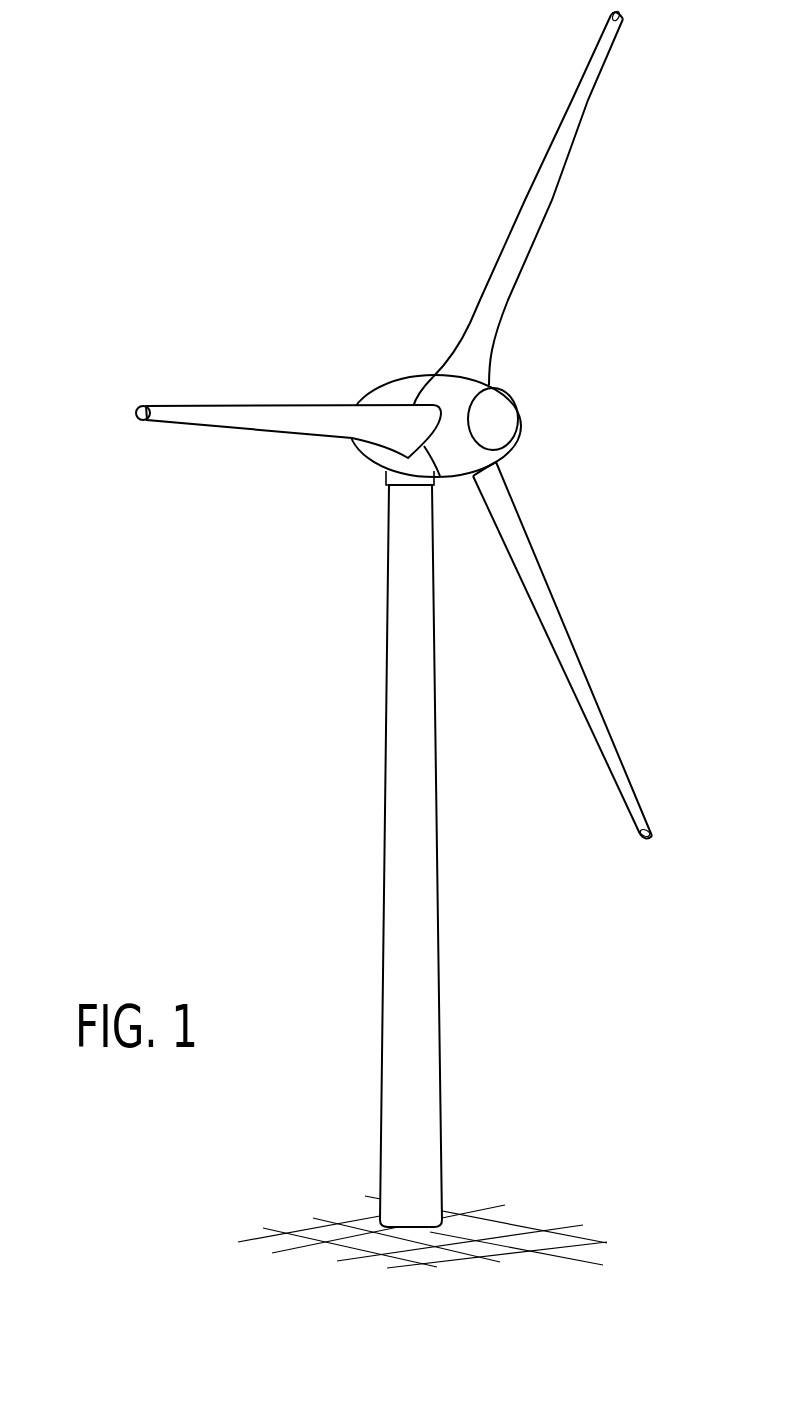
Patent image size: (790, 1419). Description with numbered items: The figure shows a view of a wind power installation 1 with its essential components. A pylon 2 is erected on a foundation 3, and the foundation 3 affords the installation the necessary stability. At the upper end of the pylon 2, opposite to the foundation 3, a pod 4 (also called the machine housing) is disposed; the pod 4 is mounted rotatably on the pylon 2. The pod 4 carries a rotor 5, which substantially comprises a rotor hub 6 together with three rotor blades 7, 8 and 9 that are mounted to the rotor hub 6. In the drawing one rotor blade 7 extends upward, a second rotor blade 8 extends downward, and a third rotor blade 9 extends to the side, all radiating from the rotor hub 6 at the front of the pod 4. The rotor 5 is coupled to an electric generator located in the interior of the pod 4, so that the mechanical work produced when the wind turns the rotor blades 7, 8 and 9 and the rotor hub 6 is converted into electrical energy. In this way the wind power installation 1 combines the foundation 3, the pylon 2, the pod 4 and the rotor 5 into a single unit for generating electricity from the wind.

The wind power installation 1 is at (228, 243).
The pylon 2 is at (402, 807).
The foundation 3 is at (478, 1226).
The pod 4 is at (381, 398).
The rotor 5 is at (394, 424).
The rotor hub 6 is at (445, 393).
The rotor blade 7 is at (543, 197).
The rotor blade 8 is at (555, 623).
The rotor blade 9 is at (248, 420).